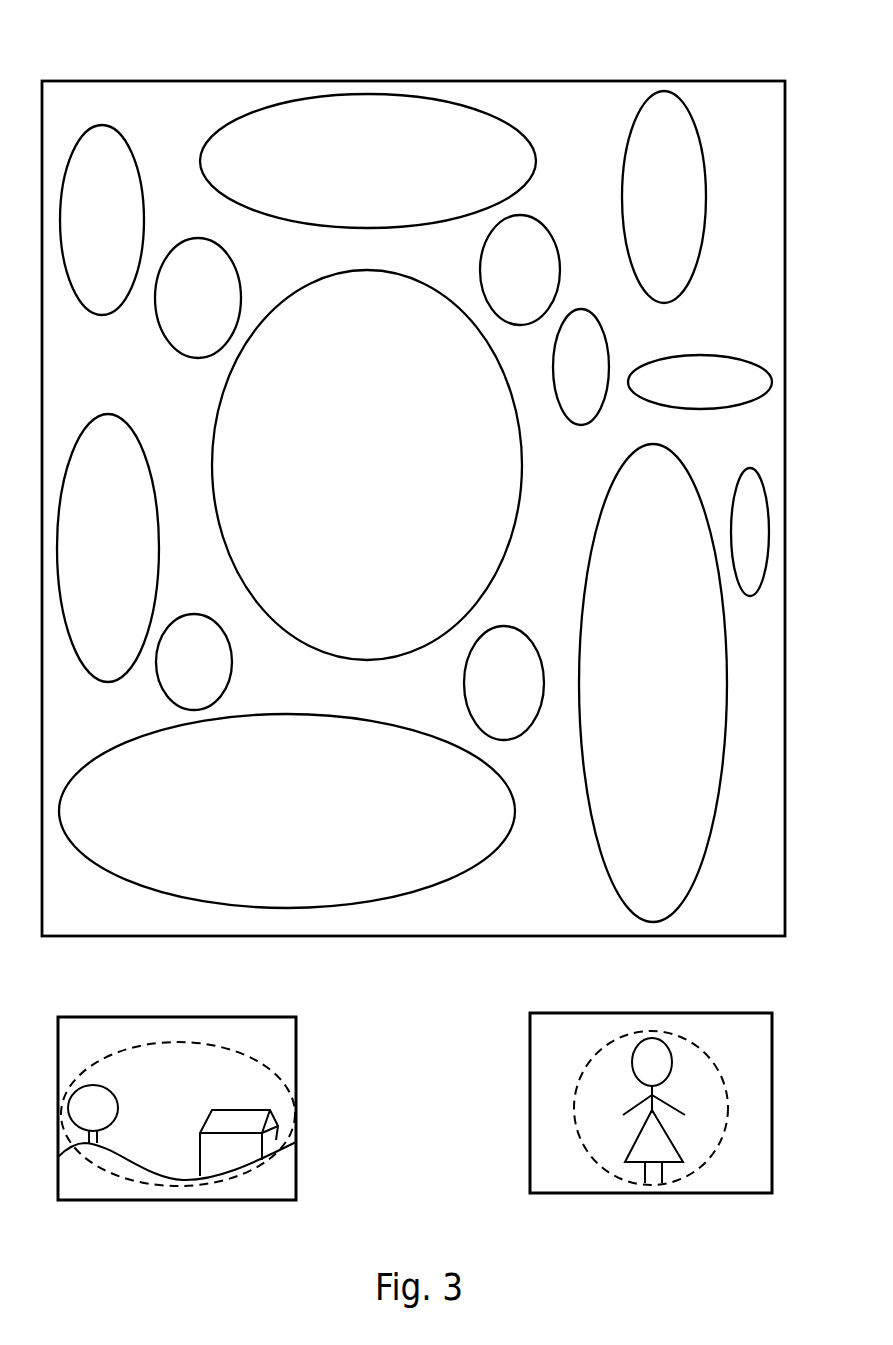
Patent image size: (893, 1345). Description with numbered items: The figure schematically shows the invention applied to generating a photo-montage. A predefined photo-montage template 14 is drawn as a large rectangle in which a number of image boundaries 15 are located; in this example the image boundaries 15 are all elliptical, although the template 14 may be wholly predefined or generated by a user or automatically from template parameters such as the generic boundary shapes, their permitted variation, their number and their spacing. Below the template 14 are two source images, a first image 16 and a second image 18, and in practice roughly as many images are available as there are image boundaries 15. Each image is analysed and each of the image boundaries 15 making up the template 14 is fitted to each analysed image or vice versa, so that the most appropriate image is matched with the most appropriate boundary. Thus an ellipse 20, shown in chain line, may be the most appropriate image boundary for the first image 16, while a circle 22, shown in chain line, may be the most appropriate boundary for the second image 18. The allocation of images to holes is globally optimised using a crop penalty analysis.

The photo-montage template 14 is at (243, 81).
The image boundaries 15 is at (543, 218).
The first image 16 is at (182, 1200).
The second image 18 is at (607, 1193).
The ellipse 20 is at (273, 1075).
The circle 22 is at (713, 1153).